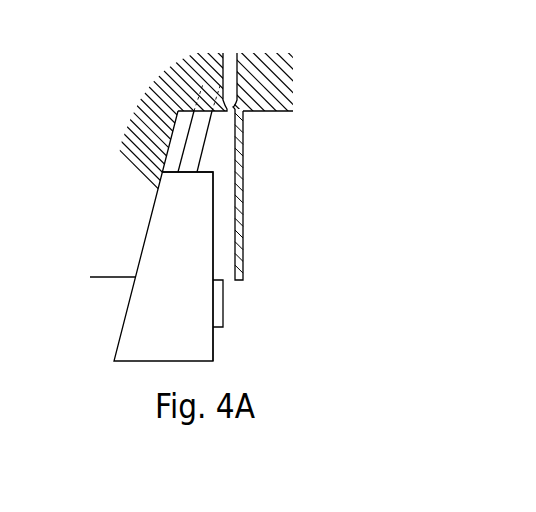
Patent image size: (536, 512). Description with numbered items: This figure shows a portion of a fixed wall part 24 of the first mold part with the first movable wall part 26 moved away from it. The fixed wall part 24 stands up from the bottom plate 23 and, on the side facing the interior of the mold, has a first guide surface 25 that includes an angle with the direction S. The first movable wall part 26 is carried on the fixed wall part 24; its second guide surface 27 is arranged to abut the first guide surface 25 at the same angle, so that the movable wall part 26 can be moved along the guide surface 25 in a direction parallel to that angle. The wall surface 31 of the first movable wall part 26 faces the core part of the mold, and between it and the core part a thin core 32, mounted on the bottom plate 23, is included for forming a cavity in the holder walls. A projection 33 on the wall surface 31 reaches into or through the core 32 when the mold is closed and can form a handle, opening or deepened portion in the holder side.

The bottom plate 23 is at (265, 68).
The fixed wall part 24 is at (127, 231).
The first guide surface 25 is at (170, 145).
The first movable wall part 26 is at (197, 345).
The second guide surface 27 is at (123, 325).
The wall surface 31 is at (214, 232).
The core 32 is at (240, 193).
The projection 33 is at (218, 307).